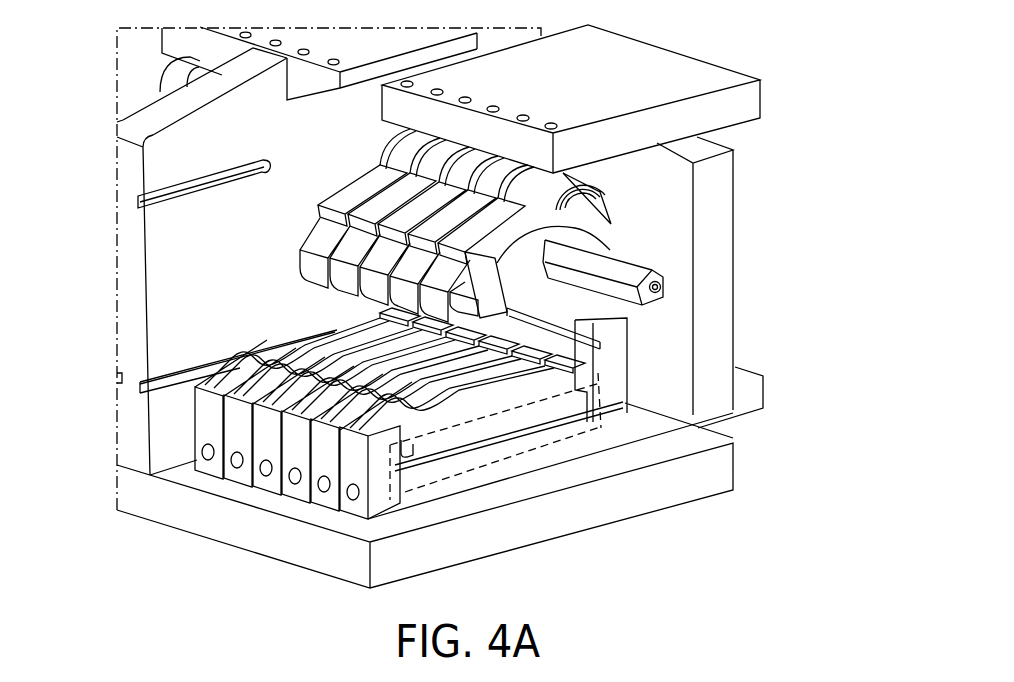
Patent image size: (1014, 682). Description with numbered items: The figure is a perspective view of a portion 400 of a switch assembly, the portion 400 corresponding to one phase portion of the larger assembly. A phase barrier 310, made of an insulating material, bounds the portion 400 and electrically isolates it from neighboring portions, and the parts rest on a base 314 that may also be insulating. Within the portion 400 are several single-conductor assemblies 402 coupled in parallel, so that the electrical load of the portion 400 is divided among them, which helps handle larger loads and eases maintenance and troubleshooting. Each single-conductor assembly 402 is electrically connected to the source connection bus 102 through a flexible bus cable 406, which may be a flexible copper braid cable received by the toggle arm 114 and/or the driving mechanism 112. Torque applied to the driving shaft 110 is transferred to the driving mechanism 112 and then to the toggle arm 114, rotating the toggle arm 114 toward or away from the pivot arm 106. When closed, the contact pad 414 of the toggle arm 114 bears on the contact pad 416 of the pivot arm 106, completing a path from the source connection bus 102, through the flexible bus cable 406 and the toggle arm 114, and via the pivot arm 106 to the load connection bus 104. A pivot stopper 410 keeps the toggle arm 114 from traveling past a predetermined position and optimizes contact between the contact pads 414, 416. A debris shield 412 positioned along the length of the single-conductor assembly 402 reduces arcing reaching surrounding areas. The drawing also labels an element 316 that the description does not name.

The portion of a switch assembly 400 is at (82, 46).
The source connection bus 102 is at (743, 98).
The load connection bus 104 is at (753, 400).
The pivot arm 106 is at (427, 447).
The driving shaft 110 is at (663, 272).
The driving mechanism 112 is at (362, 183).
The toggle arm 114 is at (325, 242).
The phase barrier 310 is at (128, 164).
The base 314 is at (148, 497).
The post 316 is at (718, 280).
The single-conductor assembly 402 is at (270, 295).
The flexible bus cable 406 is at (553, 173).
The pivot stopper 410 is at (628, 385).
The debris shield 412 is at (590, 425).
The contact pad 414 is at (585, 308).
The contact pad 416 is at (573, 355).